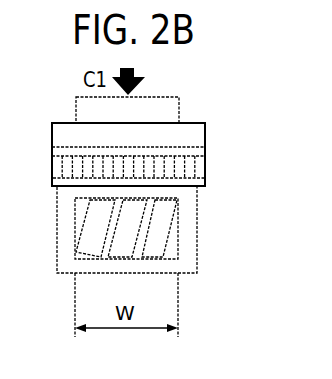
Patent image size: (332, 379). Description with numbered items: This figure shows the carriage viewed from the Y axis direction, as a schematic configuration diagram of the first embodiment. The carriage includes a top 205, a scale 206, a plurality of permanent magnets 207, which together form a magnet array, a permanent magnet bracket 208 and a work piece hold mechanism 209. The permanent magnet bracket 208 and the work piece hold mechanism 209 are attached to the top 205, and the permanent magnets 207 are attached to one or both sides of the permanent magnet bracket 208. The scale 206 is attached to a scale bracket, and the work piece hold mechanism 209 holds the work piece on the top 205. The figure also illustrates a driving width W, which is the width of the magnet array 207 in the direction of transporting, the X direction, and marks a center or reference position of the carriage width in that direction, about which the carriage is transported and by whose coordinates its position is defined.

The top 205 is at (205, 133).
The scale 206 is at (196, 167).
The permanent magnets 207 is at (180, 225).
The permanent magnet bracket 208 is at (187, 253).
The work piece hold mechanism 209 is at (179, 107).